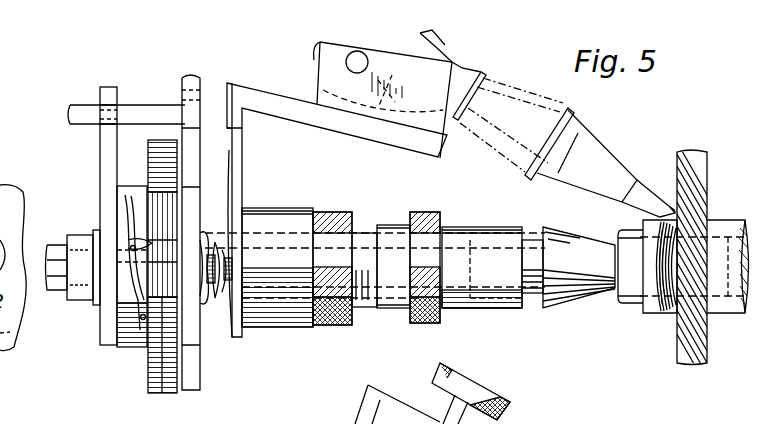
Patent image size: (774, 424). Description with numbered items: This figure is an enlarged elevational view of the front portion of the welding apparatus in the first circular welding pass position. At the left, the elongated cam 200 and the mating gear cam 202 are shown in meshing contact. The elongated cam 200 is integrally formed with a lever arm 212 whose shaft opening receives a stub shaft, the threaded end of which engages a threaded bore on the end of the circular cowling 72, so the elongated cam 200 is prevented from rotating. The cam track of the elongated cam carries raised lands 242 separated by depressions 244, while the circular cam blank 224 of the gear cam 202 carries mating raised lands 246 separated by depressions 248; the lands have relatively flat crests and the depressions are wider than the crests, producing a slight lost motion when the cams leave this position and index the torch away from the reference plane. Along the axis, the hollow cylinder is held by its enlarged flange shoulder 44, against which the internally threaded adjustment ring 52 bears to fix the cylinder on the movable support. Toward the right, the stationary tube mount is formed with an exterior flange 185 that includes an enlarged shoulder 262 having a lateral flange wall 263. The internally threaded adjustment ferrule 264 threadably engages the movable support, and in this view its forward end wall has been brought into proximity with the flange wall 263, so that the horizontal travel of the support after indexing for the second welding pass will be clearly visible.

The flange shoulder 44 is at (275, 212).
The adjustment ring 52 is at (333, 212).
The circular cowling 72 is at (195, 74).
The exterior flange 185 is at (557, 236).
The elongated cam 200 is at (108, 87).
The gear cam 202 is at (165, 140).
The lever arm 212 is at (100, 198).
The circular cam blank 224 is at (157, 347).
The raised lands 242 is at (140, 186).
The depressions 244 is at (128, 260).
The raised lands 246 is at (132, 247).
The depressions 248 is at (134, 248).
The enlarged shoulder 262 is at (563, 298).
The lateral flange wall 263 is at (535, 235).
The adjustment ferrule 264 is at (498, 205).